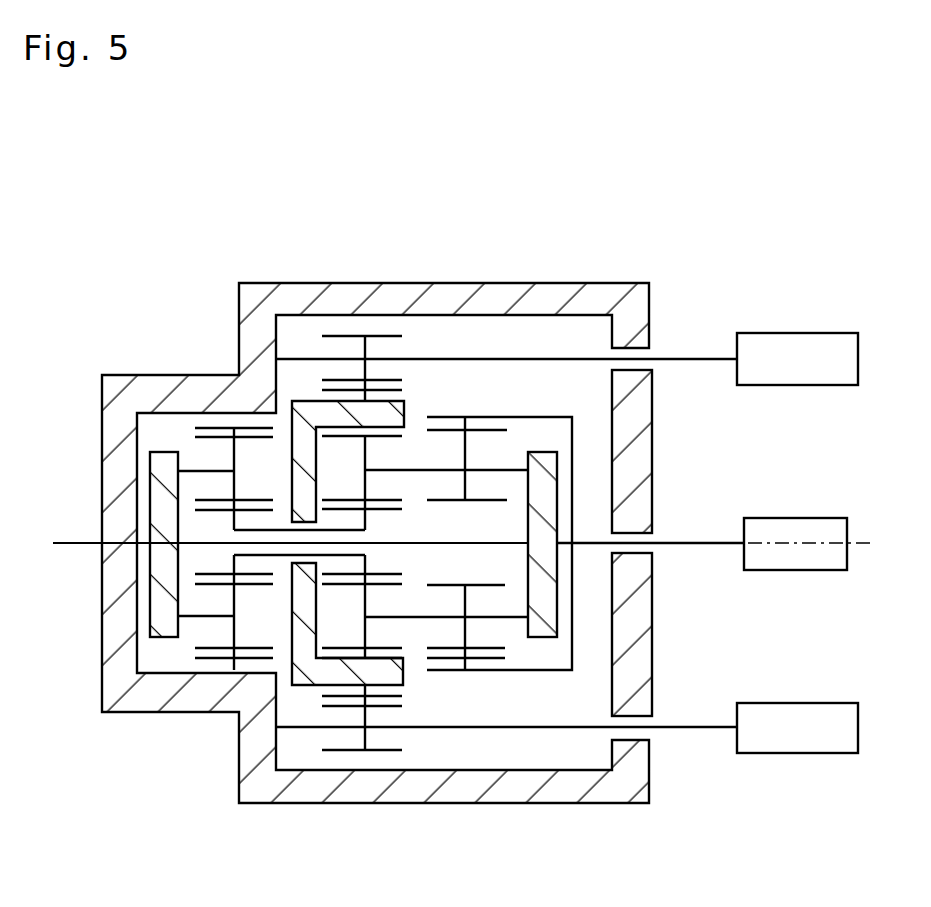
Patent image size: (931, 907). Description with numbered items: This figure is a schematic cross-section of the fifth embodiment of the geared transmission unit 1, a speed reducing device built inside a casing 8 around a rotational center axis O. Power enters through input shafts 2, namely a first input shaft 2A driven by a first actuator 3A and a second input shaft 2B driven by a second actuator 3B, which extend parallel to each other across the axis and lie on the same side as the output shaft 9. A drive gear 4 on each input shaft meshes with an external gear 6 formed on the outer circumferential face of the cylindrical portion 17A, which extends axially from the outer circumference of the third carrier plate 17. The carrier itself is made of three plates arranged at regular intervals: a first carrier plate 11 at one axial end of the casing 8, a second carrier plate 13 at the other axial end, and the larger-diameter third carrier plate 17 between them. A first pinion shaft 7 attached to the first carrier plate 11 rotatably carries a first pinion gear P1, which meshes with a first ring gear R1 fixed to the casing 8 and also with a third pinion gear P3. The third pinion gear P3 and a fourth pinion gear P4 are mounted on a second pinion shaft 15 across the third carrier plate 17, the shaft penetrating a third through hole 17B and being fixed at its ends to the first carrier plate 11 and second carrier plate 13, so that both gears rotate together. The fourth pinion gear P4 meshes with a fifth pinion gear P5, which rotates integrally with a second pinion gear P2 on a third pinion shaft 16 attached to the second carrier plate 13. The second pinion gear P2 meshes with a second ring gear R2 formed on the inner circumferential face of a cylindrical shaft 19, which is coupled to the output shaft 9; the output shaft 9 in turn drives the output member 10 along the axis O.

The geared transmission unit 1 is at (487, 192).
The input shafts 2 is at (506, 514).
The first input shaft 2A is at (677, 358).
The second input shaft 2B is at (678, 727).
The first actuator 3A is at (787, 333).
The second actuator 3B is at (790, 703).
The drive gear 4 is at (387, 335).
The external gear 6 is at (323, 395).
The first pinion shaft 7 is at (197, 465).
The casing 8 is at (102, 613).
The output shaft 9 is at (687, 544).
The output member 10 is at (787, 518).
The first carrier plate 11 is at (168, 627).
The second carrier plate 13 is at (543, 625).
The second pinion shaft 15 is at (202, 547).
The third pinion shaft 16 is at (507, 472).
The third carrier plate 17 is at (310, 672).
The cylindrical portion 17A is at (393, 417).
The third through hole 17B is at (303, 547).
The cylindrical shaft 19 is at (572, 602).
The first pinion gear P1 is at (215, 650).
The second pinion gear P2 is at (497, 443).
The third pinion gear P3 is at (203, 517).
The fourth pinion gear P4 is at (368, 570).
The fifth pinion gear P5 is at (377, 440).
The first ring gear R1 is at (205, 428).
The second ring gear R2 is at (440, 658).
The rotational center axis O is at (821, 543).